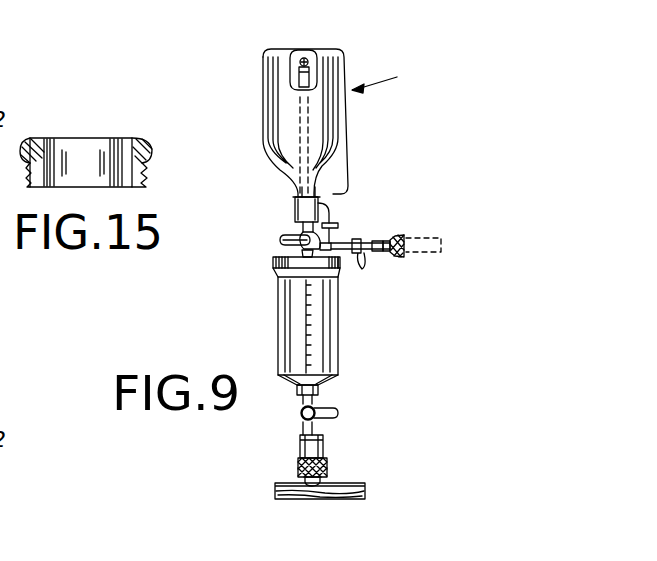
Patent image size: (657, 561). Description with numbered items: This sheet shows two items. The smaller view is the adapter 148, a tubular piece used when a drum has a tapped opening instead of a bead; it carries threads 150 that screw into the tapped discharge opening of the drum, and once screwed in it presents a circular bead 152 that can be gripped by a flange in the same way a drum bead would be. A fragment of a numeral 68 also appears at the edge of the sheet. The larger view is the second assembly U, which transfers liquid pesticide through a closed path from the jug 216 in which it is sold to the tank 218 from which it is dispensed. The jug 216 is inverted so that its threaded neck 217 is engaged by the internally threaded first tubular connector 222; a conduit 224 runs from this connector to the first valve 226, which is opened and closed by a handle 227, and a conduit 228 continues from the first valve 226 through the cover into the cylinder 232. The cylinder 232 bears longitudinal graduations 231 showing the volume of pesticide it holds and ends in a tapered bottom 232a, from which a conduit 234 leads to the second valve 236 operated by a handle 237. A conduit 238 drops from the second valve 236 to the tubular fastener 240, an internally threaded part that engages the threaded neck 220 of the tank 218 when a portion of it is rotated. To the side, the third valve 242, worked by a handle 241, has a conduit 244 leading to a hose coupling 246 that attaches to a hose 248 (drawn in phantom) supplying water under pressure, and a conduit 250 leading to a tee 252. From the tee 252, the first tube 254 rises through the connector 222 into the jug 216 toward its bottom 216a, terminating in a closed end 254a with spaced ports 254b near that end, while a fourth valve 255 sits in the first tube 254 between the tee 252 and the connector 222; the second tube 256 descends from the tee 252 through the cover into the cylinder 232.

In FIG. 15, the adapter 148 is at (132, 188).
In FIG. 15, the threads 150 is at (147, 170).
In FIG. 15, the circular bead 152 is at (148, 153).
In FIG. 9, the jug 216 is at (265, 77).
In FIG. 9, the bottom of jug 216a is at (317, 57).
In FIG. 9, the closed end 254a is at (303, 55).
In FIG. 9, the spaced ports 254b is at (306, 72).
In FIG. 9, the second assembly U is at (384, 78).
In FIG. 9, the first tube 254 is at (300, 118).
In FIG. 9, the neck 217 is at (292, 188).
In FIG. 9, the first tubular connector 222 is at (293, 205).
In FIG. 9, the conduit 224 is at (300, 226).
In FIG. 9, the handle 227 is at (281, 242).
In FIG. 9, the first valve 226 is at (304, 249).
In FIG. 9, the conduit 228 is at (319, 246).
In FIG. 9, the second tube 256 is at (308, 258).
In FIG. 9, the graduations 231 is at (316, 303).
In FIG. 9, the cylinder 232 is at (337, 327).
In FIG. 9, the tapered bottom 232a is at (330, 383).
In FIG. 9, the conduit 234 is at (300, 396).
In FIG. 9, the second valve 236 is at (301, 418).
In FIG. 9, the handle 237 is at (339, 412).
In FIG. 9, the conduit 238 is at (298, 440).
In FIG. 9, the tubular fastener 240 is at (298, 464).
In FIG. 9, the neck 220 is at (327, 479).
In FIG. 9, the tank 218 is at (344, 484).
In FIG. 9, the conduit 250 is at (347, 243).
In FIG. 9, the tee 252 is at (331, 213).
In FIG. 9, the fourth valve 255 is at (339, 226).
In FIG. 9, the third valve 242 is at (358, 242).
In FIG. 9, the conduit 244 is at (392, 235).
In FIG. 9, the hose coupling 246 is at (394, 258).
In FIG. 9, the hose 248 is at (441, 246).
In FIG. 9, the handle 241 is at (338, 262).
In FIG. 9, the element 68 is at (198, 2).